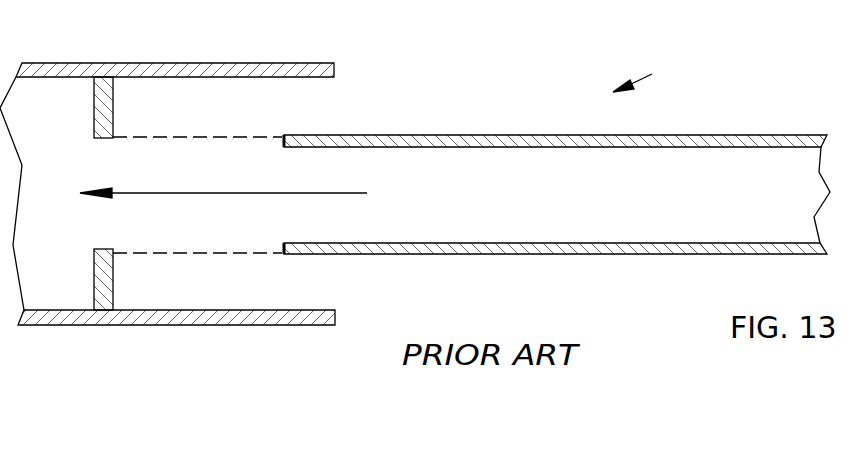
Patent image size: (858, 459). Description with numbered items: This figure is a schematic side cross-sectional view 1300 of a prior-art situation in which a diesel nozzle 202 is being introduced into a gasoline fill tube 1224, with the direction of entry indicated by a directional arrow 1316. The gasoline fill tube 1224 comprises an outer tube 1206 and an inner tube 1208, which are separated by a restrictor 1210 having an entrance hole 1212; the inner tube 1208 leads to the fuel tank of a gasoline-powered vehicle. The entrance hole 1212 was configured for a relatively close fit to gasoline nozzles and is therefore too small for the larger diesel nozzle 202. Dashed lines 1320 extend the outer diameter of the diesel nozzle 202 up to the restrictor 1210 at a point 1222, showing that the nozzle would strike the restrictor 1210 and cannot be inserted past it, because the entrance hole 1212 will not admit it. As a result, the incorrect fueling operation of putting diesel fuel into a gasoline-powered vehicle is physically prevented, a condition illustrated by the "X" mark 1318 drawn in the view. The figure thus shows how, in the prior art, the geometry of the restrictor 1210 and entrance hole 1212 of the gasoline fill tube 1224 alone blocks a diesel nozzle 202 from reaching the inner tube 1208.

The schematic side cross-sectional view 1300 is at (665, 76).
The dashed lines 1320 is at (248, 137).
The directional arrow 1316 is at (340, 193).
The "X" mark 1318 is at (197, 213).
The point 1222 is at (112, 137).
The entrance hole 1212 is at (102, 160).
The restrictor 1210 is at (104, 294).
The gasoline fill tube 1224 is at (328, 276).
The diesel nozzle 202 is at (660, 244).
The inner tube 1208 is at (55, 321).
The outer tube 1206 is at (235, 321).